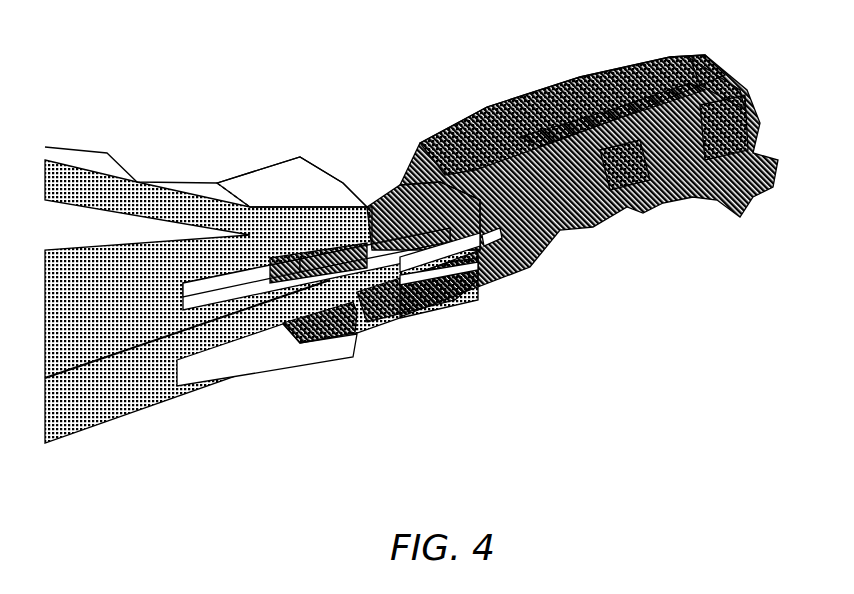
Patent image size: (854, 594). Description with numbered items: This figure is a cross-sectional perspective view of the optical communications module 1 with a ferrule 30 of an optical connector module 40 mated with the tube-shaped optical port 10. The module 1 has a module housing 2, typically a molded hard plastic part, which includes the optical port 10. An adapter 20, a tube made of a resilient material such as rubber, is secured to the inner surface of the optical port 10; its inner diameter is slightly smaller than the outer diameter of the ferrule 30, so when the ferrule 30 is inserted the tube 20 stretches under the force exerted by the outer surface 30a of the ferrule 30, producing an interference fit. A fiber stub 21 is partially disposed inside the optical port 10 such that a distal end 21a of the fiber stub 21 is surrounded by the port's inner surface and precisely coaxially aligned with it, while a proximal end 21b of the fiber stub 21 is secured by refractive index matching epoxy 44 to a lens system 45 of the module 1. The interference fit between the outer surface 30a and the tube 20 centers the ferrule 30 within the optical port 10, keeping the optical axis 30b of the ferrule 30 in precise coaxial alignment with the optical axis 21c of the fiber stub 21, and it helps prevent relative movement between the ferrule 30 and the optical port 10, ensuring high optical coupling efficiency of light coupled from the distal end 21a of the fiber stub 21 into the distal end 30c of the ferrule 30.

The optical communications module 1 is at (303, 81).
The module housing 2 is at (762, 194).
The optical port 10 is at (377, 230).
The adapter 20 is at (333, 327).
The fiber stub 21 is at (440, 278).
The distal end of the fiber stub 21a is at (426, 250).
The proximal end of the fiber stub 21b is at (472, 245).
The optical axis of the fiber stub 21c is at (448, 260).
The ferrule 30 is at (267, 323).
The outer surface of the ferrule 30a is at (223, 343).
The optical axis of the ferrule 30b is at (352, 287).
The distal end of the ferrule 30c is at (398, 287).
The optical connector module 40 is at (293, 173).
The refractive index matching epoxy 44 is at (484, 235).
The lens system 45 is at (502, 252).